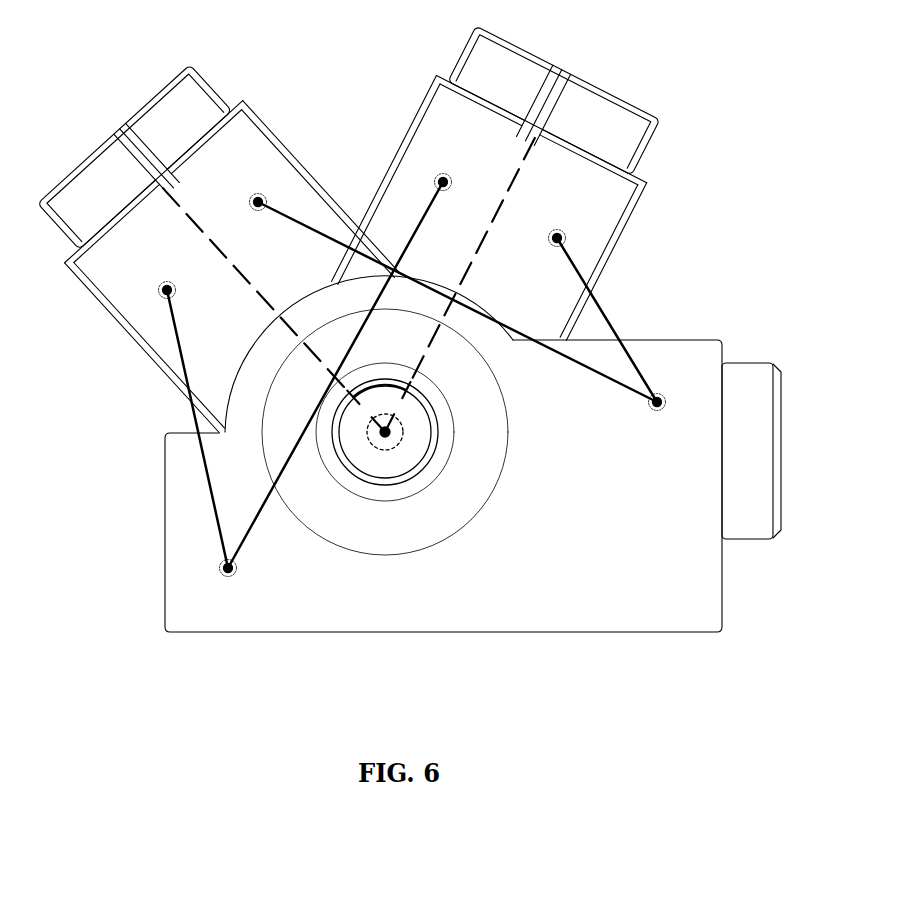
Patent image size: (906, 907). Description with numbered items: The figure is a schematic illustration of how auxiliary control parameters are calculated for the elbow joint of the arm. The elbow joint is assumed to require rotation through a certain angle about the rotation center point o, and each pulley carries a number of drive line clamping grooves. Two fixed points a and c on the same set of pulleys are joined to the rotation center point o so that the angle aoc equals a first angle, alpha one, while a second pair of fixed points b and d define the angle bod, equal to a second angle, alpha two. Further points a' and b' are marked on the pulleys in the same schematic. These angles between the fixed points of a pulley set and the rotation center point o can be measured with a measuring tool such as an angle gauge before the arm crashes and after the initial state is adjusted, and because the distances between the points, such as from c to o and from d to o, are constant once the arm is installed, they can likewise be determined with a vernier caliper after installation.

The fixed point a is at (164, 267).
The point a' on second cylinder axis side a' is at (458, 167).
The fixed point b is at (254, 183).
The point b' on second cylinder b' is at (563, 218).
The fixed point c is at (231, 584).
The fixed point d is at (671, 407).
The rotation center point o is at (385, 432).